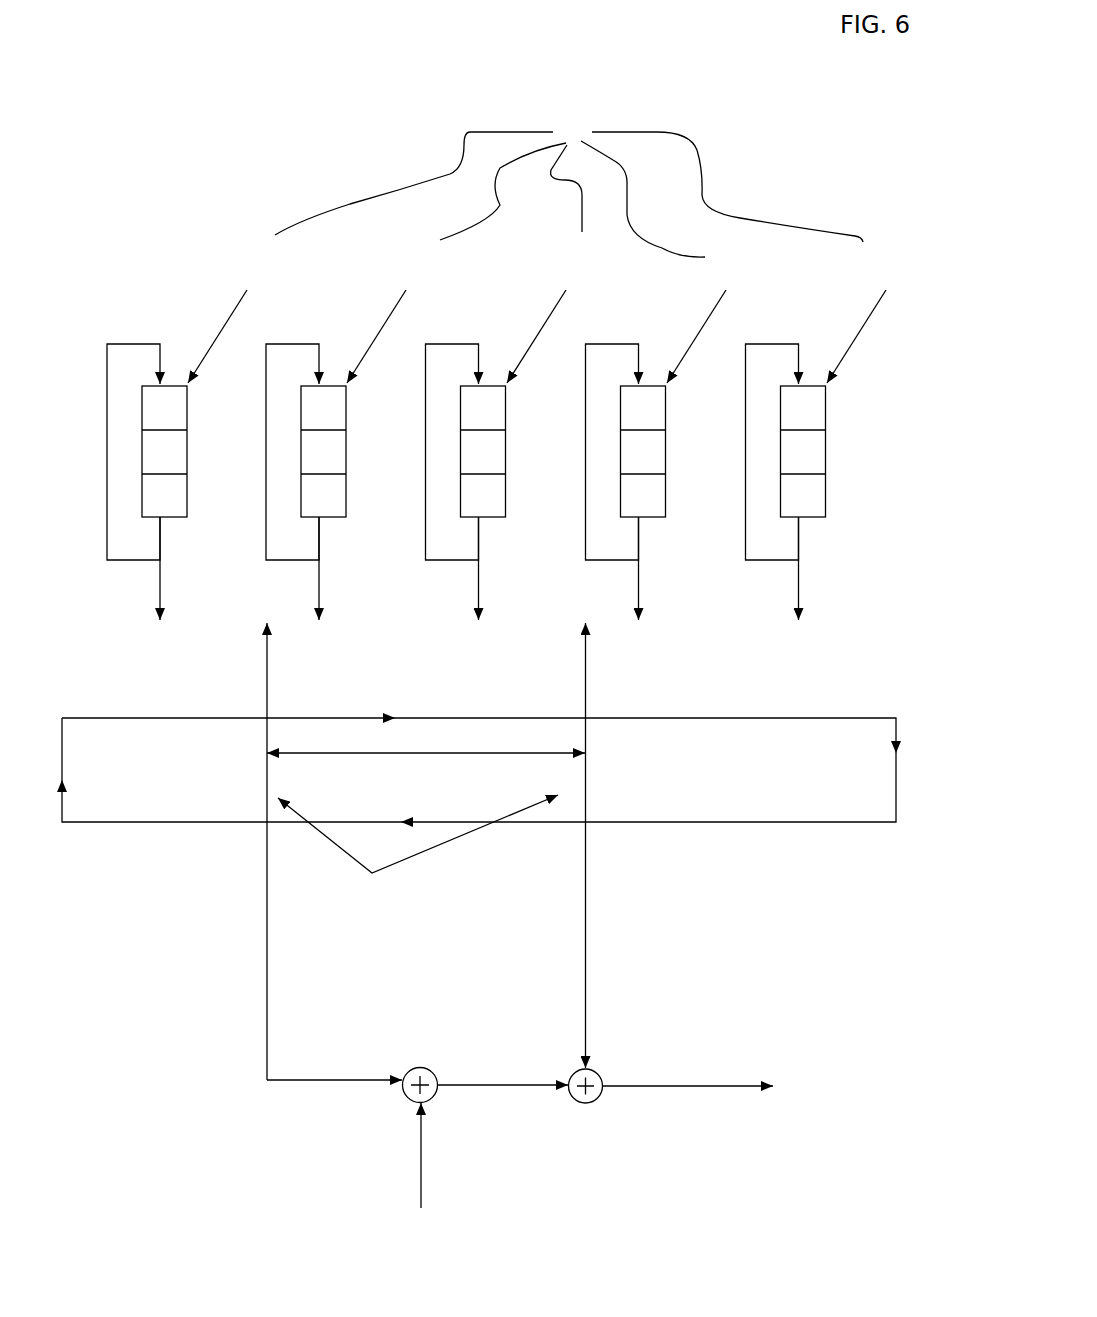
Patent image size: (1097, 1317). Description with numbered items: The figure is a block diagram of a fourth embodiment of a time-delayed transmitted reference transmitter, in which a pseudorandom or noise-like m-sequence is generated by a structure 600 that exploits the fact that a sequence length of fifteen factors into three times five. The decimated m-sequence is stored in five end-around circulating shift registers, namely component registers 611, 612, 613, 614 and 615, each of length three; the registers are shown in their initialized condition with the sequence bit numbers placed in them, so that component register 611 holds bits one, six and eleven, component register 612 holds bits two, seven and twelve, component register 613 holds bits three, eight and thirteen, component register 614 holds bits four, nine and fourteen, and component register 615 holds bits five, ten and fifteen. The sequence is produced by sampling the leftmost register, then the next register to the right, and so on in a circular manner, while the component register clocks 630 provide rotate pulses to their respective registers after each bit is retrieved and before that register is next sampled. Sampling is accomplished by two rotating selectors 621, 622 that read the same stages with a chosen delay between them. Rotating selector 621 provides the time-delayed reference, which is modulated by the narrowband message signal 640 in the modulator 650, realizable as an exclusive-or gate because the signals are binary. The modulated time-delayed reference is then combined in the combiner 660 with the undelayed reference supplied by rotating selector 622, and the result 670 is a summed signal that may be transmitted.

The structure 600 is at (495, 643).
The component register clocks 630 is at (558, 248).
The component register 611 is at (168, 520).
The component register 612 is at (327, 520).
The component register 613 is at (486, 520).
The component register 614 is at (646, 520).
The component register 615 is at (806, 520).
The rotating selector 621 is at (267, 975).
The rotating selector 622 is at (582, 972).
The narrowband message signal 640 is at (420, 1205).
The modulator 650 is at (405, 1103).
The combiner 660 is at (575, 1106).
The result 670 is at (770, 1090).